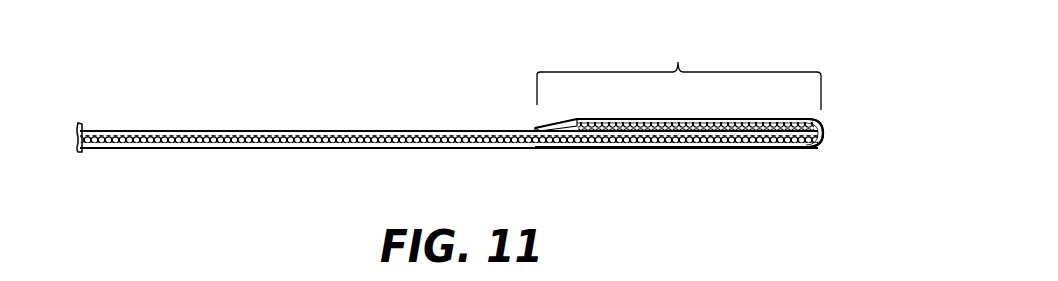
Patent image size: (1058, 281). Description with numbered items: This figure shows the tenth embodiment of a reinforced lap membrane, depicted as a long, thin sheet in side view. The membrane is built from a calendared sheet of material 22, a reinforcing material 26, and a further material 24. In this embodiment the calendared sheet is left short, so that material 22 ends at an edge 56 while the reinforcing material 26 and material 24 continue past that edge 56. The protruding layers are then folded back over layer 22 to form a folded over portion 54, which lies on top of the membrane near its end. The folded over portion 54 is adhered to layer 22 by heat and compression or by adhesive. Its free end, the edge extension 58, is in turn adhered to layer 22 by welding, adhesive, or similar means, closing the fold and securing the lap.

The material 22 is at (318, 131).
The material 24 is at (348, 149).
The reinforcing material 26 is at (415, 131).
The folded over portion 54 is at (679, 88).
The edge 56 is at (825, 121).
The edge extension 58 is at (558, 124).